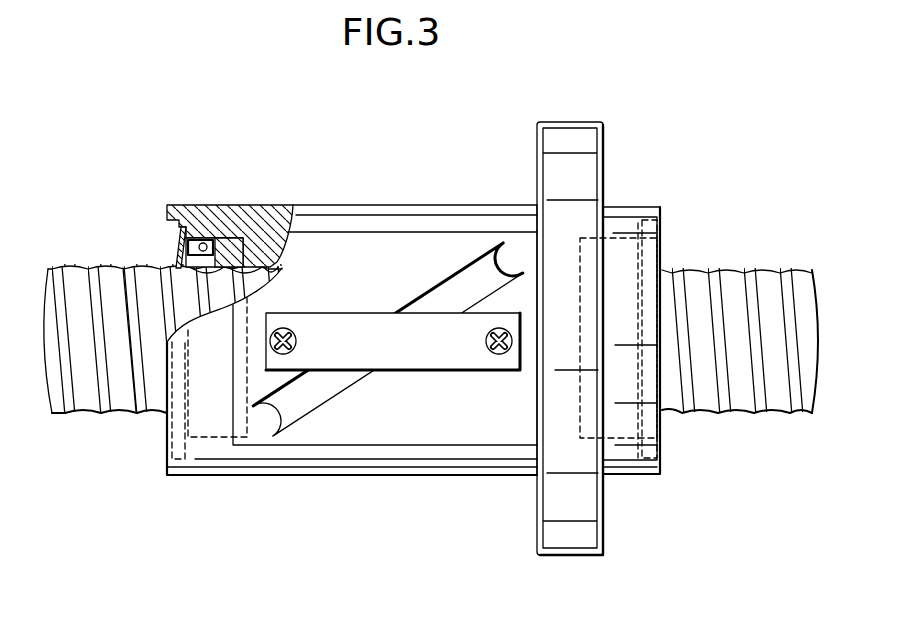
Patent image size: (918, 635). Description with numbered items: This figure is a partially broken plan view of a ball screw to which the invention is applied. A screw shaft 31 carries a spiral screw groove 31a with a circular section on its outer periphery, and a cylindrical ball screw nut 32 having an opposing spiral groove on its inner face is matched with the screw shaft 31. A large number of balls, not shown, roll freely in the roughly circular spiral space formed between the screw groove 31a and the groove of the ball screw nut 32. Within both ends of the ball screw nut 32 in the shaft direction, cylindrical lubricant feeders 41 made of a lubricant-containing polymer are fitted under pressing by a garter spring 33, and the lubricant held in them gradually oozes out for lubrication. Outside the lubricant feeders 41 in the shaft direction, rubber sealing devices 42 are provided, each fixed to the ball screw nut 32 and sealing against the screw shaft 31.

The screw shaft 31 is at (75, 240).
The screw groove 31a is at (125, 398).
The ball screw nut 32 is at (413, 226).
The garter spring 33 is at (204, 241).
The lubricant feeder 41 is at (231, 247).
The rubber sealing device 42 is at (179, 247).